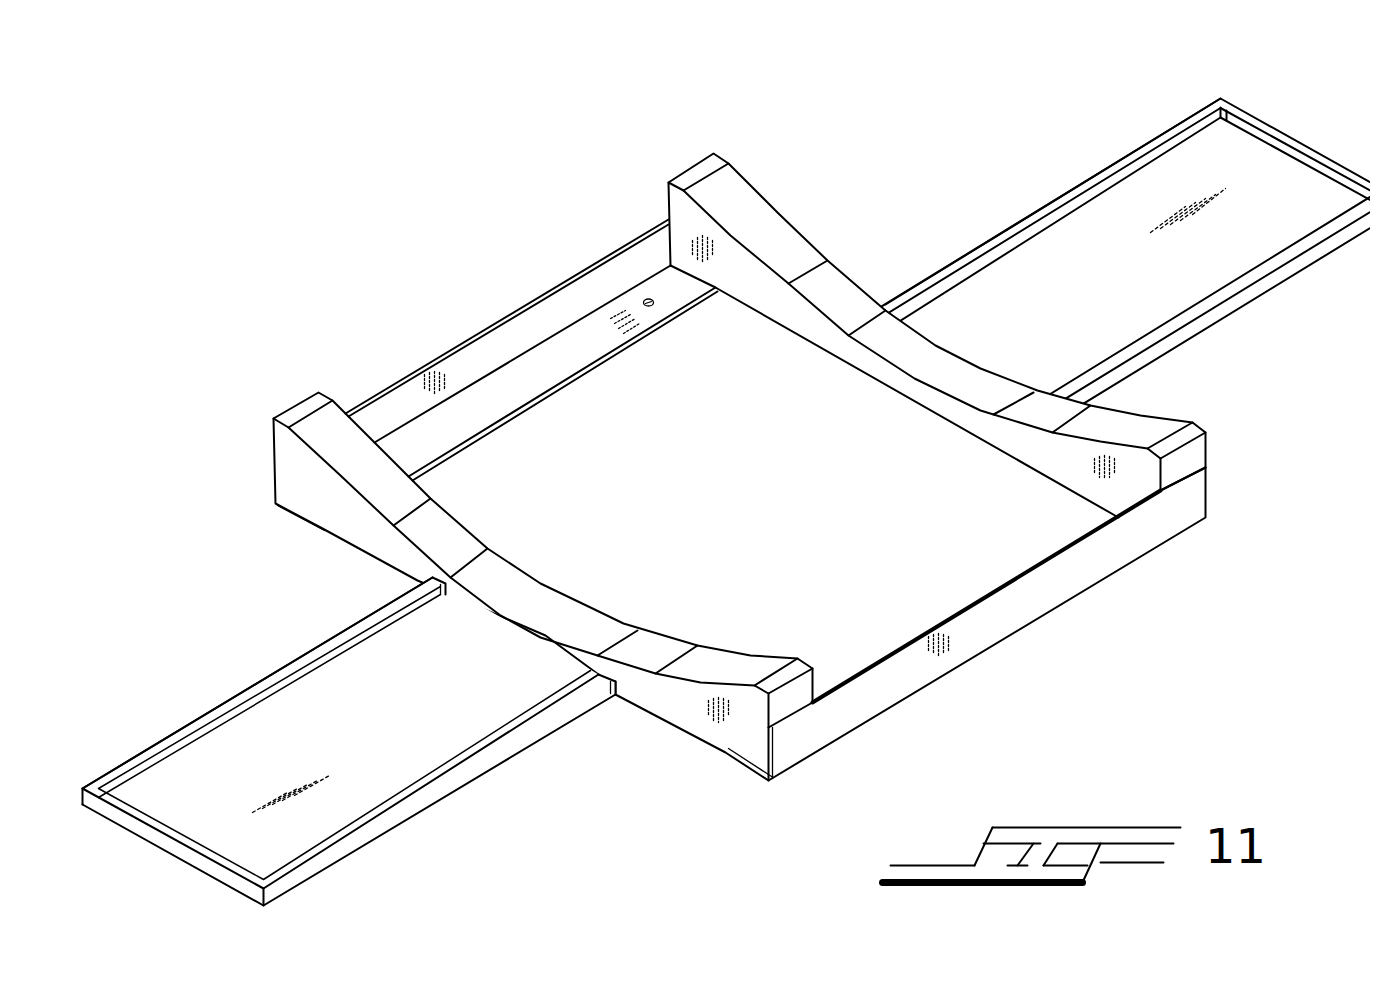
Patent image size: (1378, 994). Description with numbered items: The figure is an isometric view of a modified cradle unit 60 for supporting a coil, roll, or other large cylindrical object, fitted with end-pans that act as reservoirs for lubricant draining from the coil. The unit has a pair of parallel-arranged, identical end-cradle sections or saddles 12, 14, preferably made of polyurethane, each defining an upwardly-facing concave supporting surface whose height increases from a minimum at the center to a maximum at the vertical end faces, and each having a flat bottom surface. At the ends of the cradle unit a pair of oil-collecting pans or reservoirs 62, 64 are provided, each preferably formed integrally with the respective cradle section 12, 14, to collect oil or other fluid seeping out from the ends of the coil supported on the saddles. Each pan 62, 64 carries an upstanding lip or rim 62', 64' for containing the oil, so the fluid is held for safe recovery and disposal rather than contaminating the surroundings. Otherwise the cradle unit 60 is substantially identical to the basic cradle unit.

The end-cradle section or saddle 12 is at (315, 460).
The end-cradle section or saddle 14 is at (840, 270).
The modification of the cradle unit 60 is at (514, 225).
The oil-collection pan 62 is at (349, 742).
The upstanding lip or rim 62' is at (240, 683).
The oil-collection pan 64 is at (1036, 277).
The upstanding lip or rim 64' is at (1053, 183).